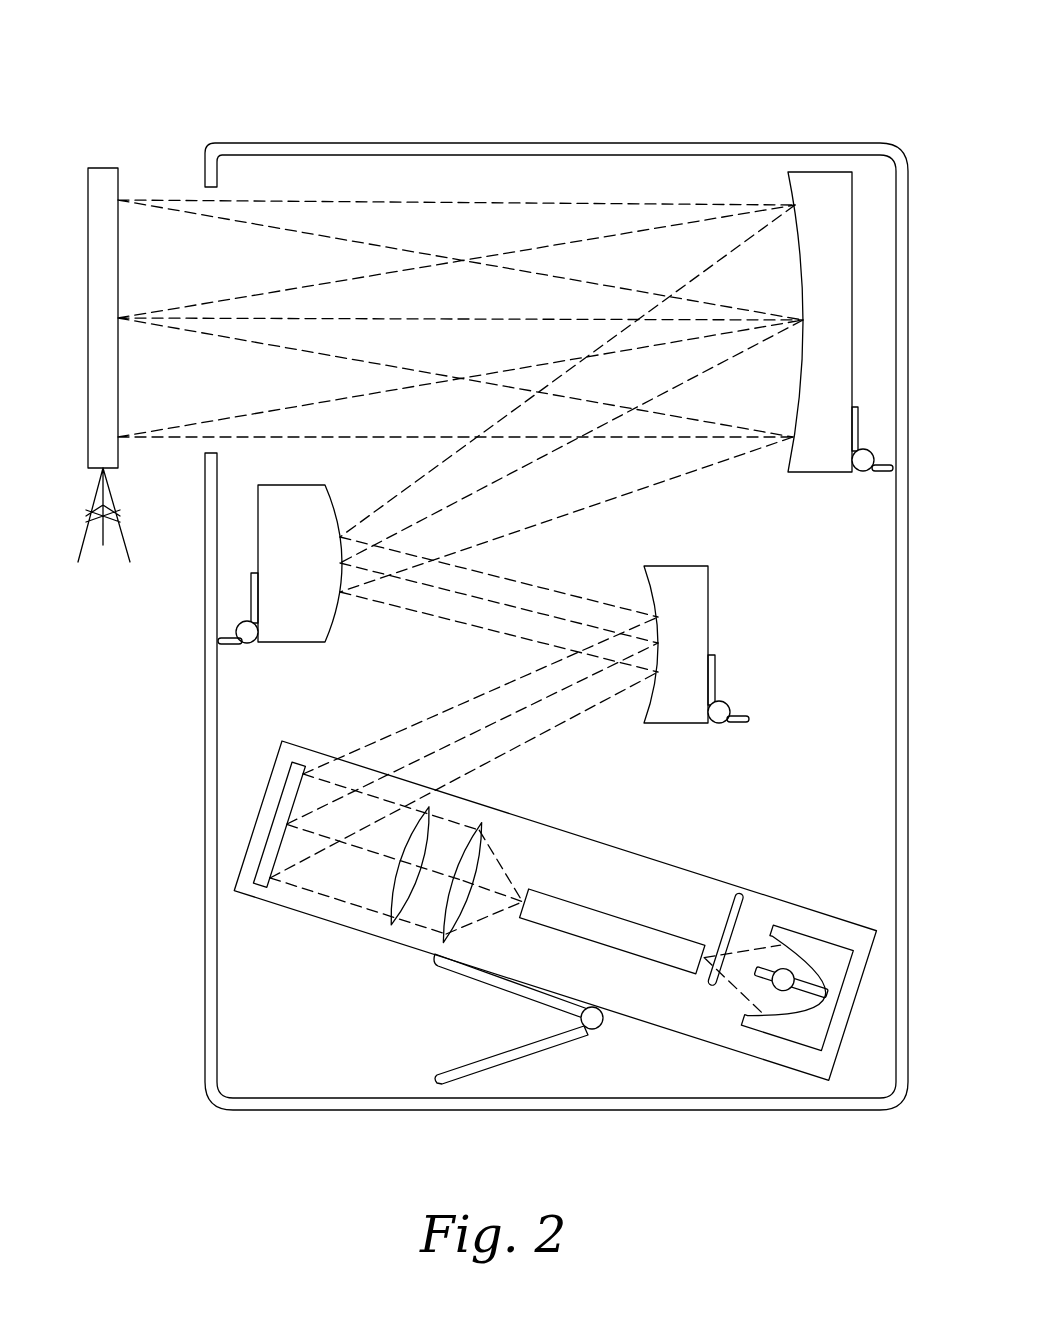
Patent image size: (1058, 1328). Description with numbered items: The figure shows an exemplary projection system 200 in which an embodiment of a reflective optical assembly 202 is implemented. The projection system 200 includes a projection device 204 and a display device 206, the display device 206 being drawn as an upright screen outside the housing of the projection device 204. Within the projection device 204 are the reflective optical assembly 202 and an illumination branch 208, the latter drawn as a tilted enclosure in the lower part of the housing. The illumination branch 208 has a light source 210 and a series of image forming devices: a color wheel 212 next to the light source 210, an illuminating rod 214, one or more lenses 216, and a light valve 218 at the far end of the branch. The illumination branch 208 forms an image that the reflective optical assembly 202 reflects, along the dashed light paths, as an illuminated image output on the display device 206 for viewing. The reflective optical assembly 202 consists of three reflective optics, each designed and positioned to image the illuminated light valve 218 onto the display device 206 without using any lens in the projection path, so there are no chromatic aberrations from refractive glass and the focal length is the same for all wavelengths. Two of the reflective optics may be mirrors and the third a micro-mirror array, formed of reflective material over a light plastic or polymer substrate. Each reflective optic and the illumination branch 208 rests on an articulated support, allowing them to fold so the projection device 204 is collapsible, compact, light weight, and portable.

The projection system 200 is at (761, 56).
The reflective optical assembly 202 is at (782, 754).
The projection device 204 is at (548, 142).
The display device 206 is at (107, 167).
The illumination branch 208 is at (557, 907).
The light source 210 is at (783, 926).
The color wheel 212 is at (745, 891).
The illuminating rod 214 is at (574, 941).
The lenses 216 is at (474, 815).
The light valve 218 is at (264, 884).